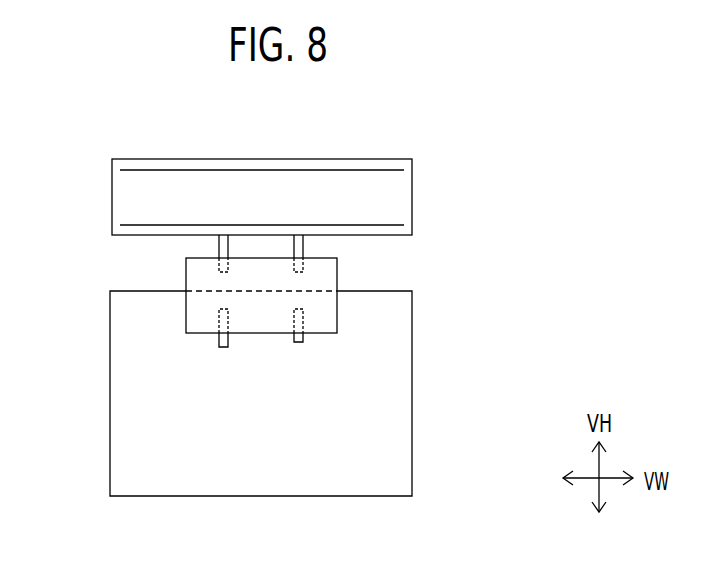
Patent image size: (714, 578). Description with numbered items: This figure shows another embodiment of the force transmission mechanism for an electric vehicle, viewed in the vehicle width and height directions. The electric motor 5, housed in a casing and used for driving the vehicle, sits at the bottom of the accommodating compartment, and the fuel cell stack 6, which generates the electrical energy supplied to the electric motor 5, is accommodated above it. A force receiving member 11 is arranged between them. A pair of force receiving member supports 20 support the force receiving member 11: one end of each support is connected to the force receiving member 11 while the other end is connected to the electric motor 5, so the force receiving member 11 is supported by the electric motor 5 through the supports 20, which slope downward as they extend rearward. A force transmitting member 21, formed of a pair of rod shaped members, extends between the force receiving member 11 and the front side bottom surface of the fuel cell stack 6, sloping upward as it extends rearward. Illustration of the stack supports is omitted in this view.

The electric motor 5 is at (392, 496).
The fuel cell stack 6 is at (394, 159).
The force receiving member 11 is at (186, 308).
The force receiving member supports 20 is at (295, 341).
The force transmitting member 21 is at (298, 248).